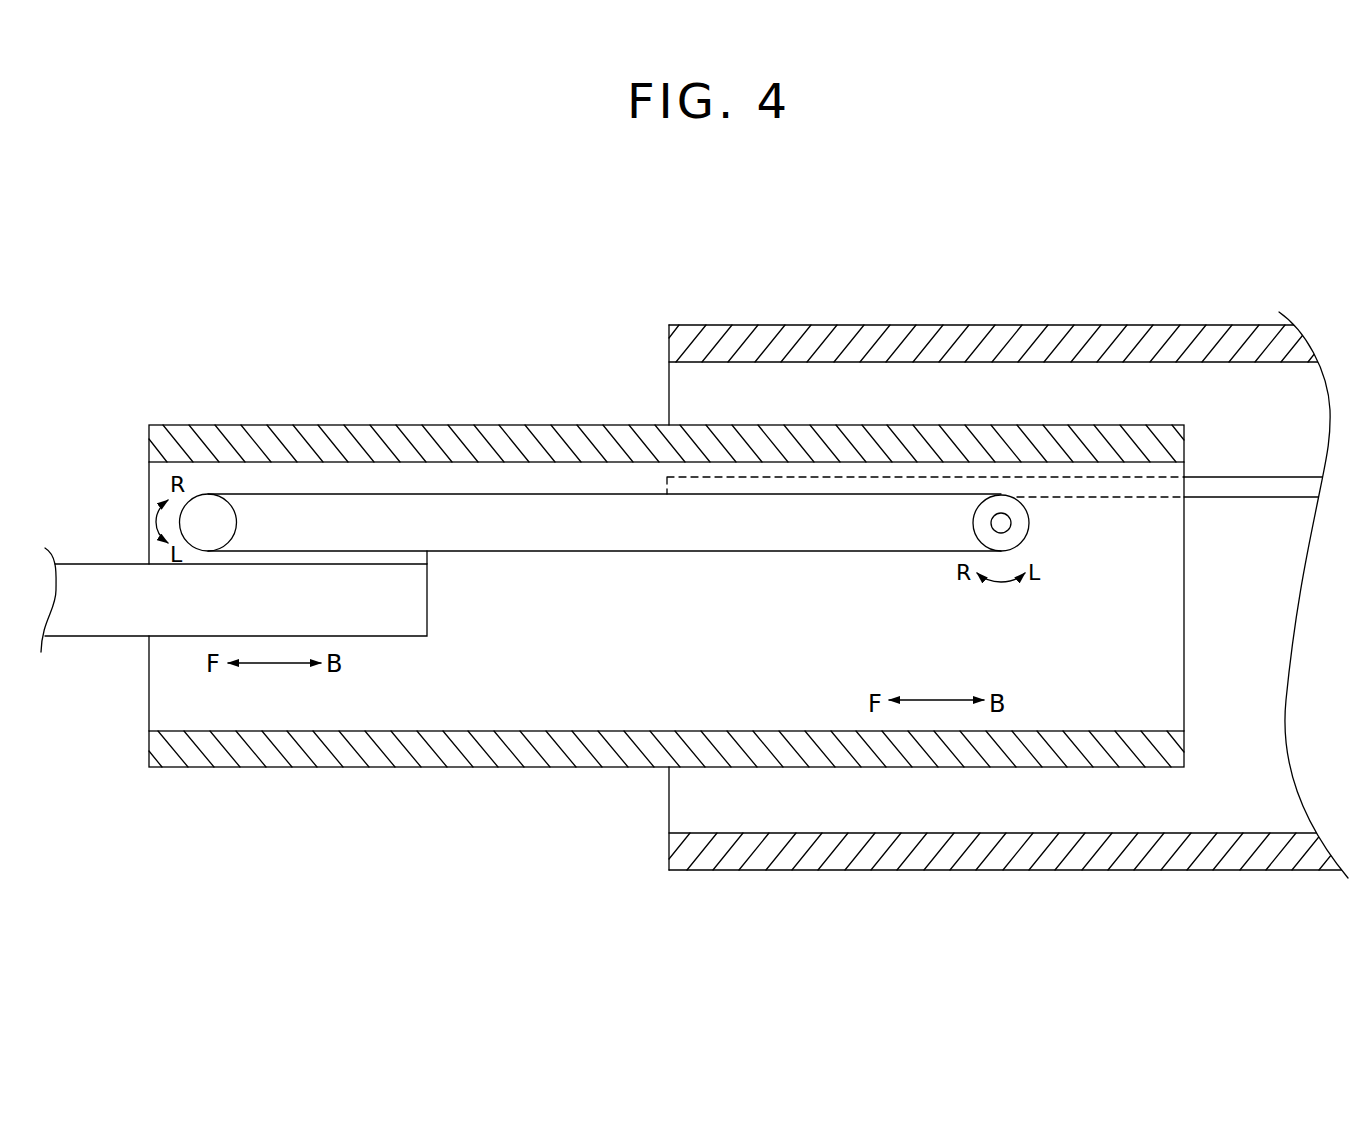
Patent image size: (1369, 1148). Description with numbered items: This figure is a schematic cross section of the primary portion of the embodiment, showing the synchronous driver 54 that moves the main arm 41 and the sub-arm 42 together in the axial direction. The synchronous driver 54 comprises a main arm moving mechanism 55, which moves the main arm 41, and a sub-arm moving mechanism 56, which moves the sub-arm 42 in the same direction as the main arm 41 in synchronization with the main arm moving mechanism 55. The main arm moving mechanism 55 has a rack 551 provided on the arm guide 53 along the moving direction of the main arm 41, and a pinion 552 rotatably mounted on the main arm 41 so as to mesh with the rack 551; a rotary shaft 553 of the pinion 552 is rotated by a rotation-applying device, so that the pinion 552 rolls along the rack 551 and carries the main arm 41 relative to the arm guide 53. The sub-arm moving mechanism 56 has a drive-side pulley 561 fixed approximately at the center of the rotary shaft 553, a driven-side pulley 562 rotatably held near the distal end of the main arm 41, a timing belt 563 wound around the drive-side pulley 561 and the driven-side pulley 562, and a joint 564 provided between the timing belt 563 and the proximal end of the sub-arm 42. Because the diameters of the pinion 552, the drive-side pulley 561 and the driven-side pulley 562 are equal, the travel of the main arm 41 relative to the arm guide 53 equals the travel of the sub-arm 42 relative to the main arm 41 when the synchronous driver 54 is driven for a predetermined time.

The main arm 41 is at (387, 425).
The sub-arm 42 is at (398, 628).
The arm guide 53 is at (690, 337).
The synchronous driver 54 is at (621, 681).
The main arm moving mechanism 55 is at (1184, 396).
The rack 551 is at (1087, 487).
The pinion 552 is at (1060, 579).
The rotary shaft 553 is at (1001, 523).
The sub-arm moving mechanism 56 is at (643, 488).
The drive-side pulley 561 is at (1028, 522).
The driven-side pulley 562 is at (211, 512).
The timing belt 563 is at (338, 493).
The joint 564 is at (428, 558).